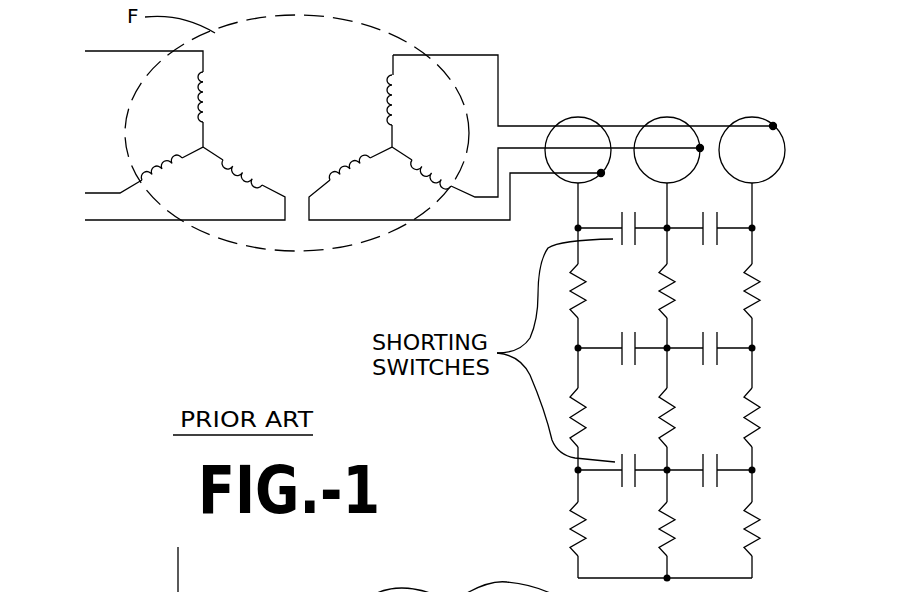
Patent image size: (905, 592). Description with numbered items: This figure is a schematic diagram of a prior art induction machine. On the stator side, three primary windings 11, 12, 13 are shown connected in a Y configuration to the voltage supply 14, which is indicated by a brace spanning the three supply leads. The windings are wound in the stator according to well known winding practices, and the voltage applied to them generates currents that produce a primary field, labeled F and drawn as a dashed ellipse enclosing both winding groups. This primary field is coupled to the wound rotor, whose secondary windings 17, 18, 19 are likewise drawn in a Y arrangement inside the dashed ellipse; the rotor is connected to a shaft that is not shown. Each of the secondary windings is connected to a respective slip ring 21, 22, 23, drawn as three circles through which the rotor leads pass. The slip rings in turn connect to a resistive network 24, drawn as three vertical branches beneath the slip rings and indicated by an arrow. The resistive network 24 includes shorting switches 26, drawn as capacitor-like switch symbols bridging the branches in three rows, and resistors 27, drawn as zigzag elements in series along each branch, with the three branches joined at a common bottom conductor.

The primary winding 11 is at (206, 96).
The primary winding 12 is at (176, 160).
The primary winding 13 is at (247, 175).
The voltage supply 14 is at (78, 230).
The rotor winding 17 is at (387, 90).
The rotor winding 18 is at (362, 157).
The rotor winding 19 is at (432, 173).
The slip ring 21 is at (567, 117).
The slip ring 22 is at (663, 117).
The slip ring 23 is at (750, 117).
The resistive network 24 is at (763, 252).
The shorting switch 26 is at (719, 356).
The resistor 27 is at (759, 419).